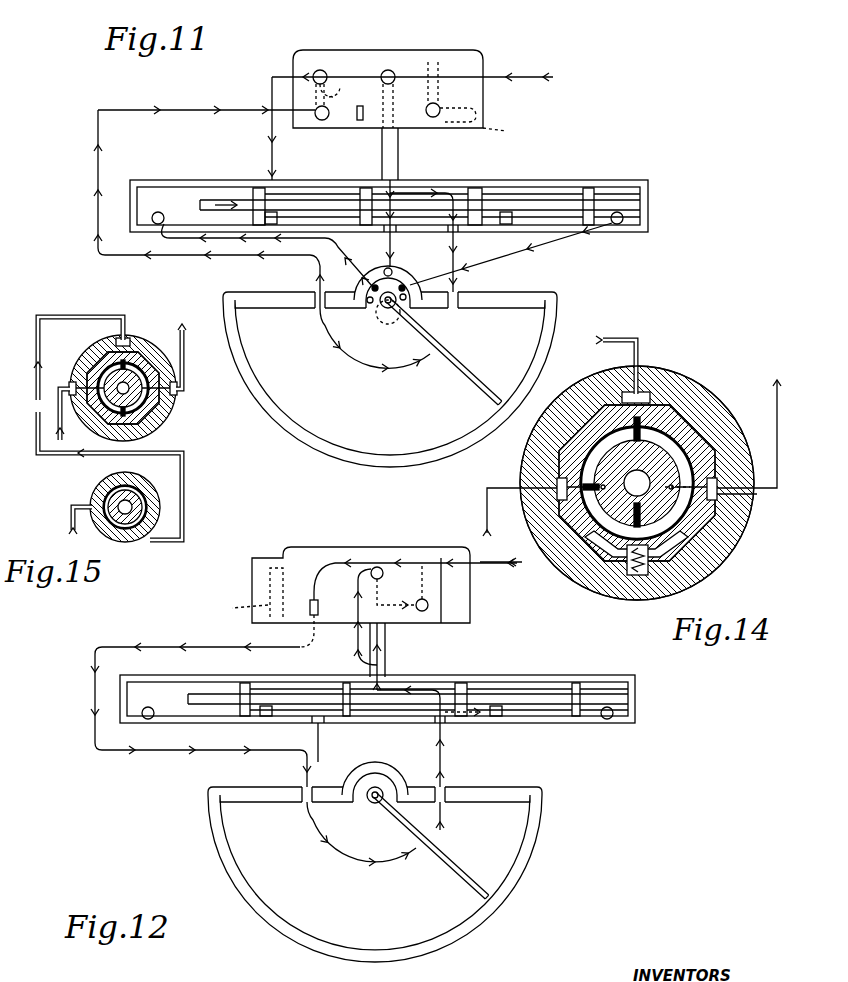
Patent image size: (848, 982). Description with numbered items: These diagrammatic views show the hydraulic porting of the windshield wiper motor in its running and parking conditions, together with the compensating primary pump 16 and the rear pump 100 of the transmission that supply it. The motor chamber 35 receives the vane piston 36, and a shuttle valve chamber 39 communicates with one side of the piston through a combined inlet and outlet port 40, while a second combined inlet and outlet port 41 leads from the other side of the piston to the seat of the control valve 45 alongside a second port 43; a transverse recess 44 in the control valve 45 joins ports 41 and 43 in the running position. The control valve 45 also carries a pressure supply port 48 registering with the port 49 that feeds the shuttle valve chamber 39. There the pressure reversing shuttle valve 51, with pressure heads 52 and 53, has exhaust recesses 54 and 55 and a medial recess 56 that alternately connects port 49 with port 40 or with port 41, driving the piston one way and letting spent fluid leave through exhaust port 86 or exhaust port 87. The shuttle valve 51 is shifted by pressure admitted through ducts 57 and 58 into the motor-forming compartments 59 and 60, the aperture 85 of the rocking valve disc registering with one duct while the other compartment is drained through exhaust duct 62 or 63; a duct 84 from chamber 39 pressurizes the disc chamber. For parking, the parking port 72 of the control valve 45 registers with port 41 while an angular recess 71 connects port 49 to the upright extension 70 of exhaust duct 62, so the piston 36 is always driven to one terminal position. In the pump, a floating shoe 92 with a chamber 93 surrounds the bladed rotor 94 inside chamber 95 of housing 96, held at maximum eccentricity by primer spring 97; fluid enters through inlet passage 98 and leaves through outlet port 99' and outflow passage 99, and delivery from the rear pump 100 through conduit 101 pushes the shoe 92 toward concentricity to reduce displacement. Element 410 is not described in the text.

In FIG. 14, the compensating pump 16 is at (576, 594).
In FIG. 15, the compensating pump 16 is at (180, 418).
In FIG. 11, the motor chamber 35 is at (400, 415).
In FIG. 12, the motor chamber 35 is at (392, 913).
In FIG. 11, the vane piston 36 is at (472, 380).
In FIG. 12, the vane piston 36 is at (465, 875).
In FIG. 11, the shuttle valve chamber 39 is at (562, 178).
In FIG. 11, the combined inlet and outlet port 40 is at (458, 245).
In FIG. 12, the combined inlet and outlet port 40 is at (442, 765).
In FIG. 11, the second combined inlet and outlet port 41 is at (262, 241).
In FIG. 12, the second combined inlet and outlet port 41 is at (321, 768).
In FIG. 11, the second port 43 is at (325, 70).
In FIG. 11, the transverse recess 44 is at (341, 89).
In FIG. 12, the transverse recess 44 is at (243, 596).
In FIG. 11, the control valve 45 is at (494, 100).
In FIG. 11, the pressure supply port 48 is at (381, 76).
In FIG. 12, the pressure supply port 48 is at (378, 566).
In FIG. 11, the port 49 is at (399, 170).
In FIG. 12, the port 49 is at (386, 655).
In FIG. 11, the pressure reversing shuttle valve 51 is at (482, 190).
In FIG. 11, the pressure head 52 is at (591, 190).
In FIG. 11, the pressure head 53 is at (259, 187).
In FIG. 11, the exhaust recess 54 is at (532, 202).
In FIG. 11, the exhaust recess 55 is at (312, 203).
In FIG. 11, the medial port-connecting recess 56 is at (420, 210).
In FIG. 11, the duct 57 is at (156, 225).
In FIG. 12, the duct 57 is at (147, 720).
In FIG. 11, the duct 58 is at (618, 225).
In FIG. 12, the duct 58 is at (608, 720).
In FIG. 11, the motor-forming compartment 59 is at (405, 206).
In FIG. 11, the motor-forming compartment 60 is at (648, 193).
In FIG. 11, the exhaust duct 62 is at (412, 304).
In FIG. 11, the exhaust duct 63 is at (377, 313).
In FIG. 11, the upright extension 70 is at (436, 117).
In FIG. 12, the upright extension 70 is at (428, 612).
In FIG. 11, the angular recess 71 is at (507, 132).
In FIG. 11, the parking port 72 is at (372, 131).
In FIG. 12, the parking port 72 is at (320, 602).
In FIG. 11, the duct 84 is at (393, 272).
In FIG. 12, the duct 84 is at (335, 727).
In FIG. 11, the aperture 85 is at (376, 283).
In FIG. 11, the exhaust port 86 is at (506, 224).
In FIG. 12, the exhaust port 86 is at (496, 717).
In FIG. 11, the exhaust port 87 is at (279, 221).
In FIG. 12, the exhaust port 87 is at (265, 717).
In FIG. 14, the shoe 92 is at (672, 430).
In FIG. 14, the chamber 93 is at (605, 380).
In FIG. 14, the bladed rotor 94 is at (650, 420).
In FIG. 14, the chamber 95 is at (690, 576).
In FIG. 14, the housing 96 is at (622, 590).
In FIG. 14, the primer spring 97 is at (639, 578).
In FIG. 14, the inlet passage 98 is at (557, 486).
In FIG. 14, the outflow passage 99 is at (748, 452).
In FIG. 14, the outlet port 99' is at (738, 447).
In FIG. 15, the rear pump 100 is at (130, 541).
In FIG. 14, the conduit 101 is at (645, 360).
In FIG. 11, the valve 410 is at (344, 114).